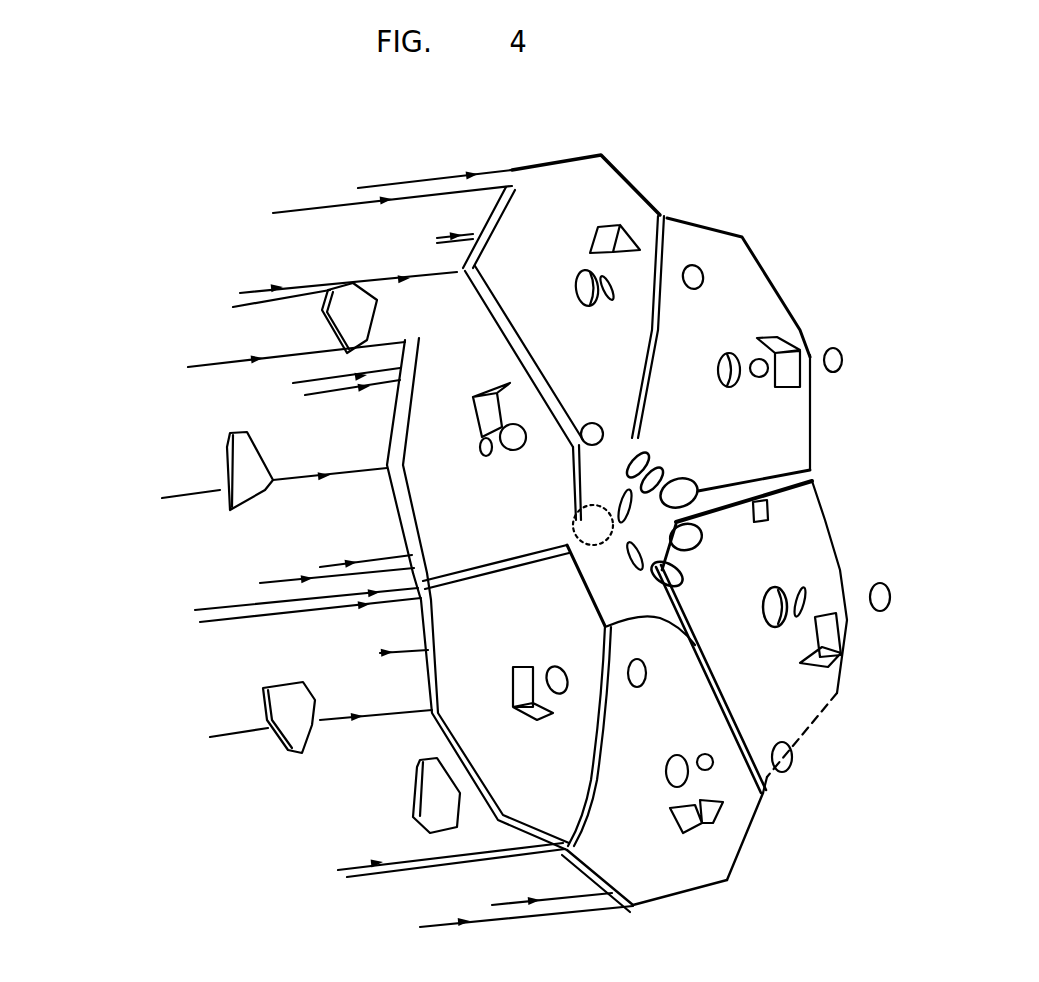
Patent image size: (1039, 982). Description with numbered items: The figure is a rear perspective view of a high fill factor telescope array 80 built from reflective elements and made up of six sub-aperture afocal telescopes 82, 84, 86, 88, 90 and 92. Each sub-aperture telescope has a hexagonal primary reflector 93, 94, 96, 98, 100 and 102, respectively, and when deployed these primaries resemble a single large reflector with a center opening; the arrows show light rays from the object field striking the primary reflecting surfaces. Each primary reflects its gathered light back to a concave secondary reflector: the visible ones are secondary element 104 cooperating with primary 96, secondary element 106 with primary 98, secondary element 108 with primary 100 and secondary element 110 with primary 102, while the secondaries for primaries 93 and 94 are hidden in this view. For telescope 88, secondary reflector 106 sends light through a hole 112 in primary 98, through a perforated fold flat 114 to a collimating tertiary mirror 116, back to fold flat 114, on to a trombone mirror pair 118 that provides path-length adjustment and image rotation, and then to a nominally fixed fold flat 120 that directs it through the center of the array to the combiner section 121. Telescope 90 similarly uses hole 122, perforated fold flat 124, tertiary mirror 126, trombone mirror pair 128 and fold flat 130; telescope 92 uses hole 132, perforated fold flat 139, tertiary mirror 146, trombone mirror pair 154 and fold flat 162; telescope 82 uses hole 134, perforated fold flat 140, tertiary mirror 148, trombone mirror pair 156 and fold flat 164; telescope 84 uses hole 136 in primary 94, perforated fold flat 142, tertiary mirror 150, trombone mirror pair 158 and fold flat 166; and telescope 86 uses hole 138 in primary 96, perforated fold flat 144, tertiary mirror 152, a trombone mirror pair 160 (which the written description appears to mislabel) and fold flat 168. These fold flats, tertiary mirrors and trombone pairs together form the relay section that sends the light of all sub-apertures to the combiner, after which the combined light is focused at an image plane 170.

The high fill factor telescope array 80 is at (860, 172).
The sub-aperture afocal telescope 82 is at (818, 306).
The sub-aperture afocal telescope 84 is at (858, 532).
The sub-aperture afocal telescope 86 is at (775, 847).
The sub-aperture afocal telescope 88 is at (274, 816).
The sub-aperture afocal telescope 90 is at (140, 408).
The sub-aperture afocal telescope 92 is at (640, 158).
The primary reflector 93 is at (796, 427).
The primary reflector 94 is at (822, 688).
The primary reflector 96 is at (698, 872).
The primary reflector 98 is at (462, 685).
The primary reflector 100 is at (436, 485).
The primary reflector 102 is at (536, 208).
The secondary element 104 is at (413, 800).
The secondary element 106 is at (262, 692).
The secondary element 108 is at (228, 503).
The secondary element 110 is at (347, 287).
The hole 112 is at (533, 667).
The perforated fold flat 114 is at (567, 693).
The collimating tertiary mirror 116 is at (645, 680).
The trombone mirror pair 118 is at (510, 677).
The fold flat 120 is at (690, 640).
The combiner section 121 is at (590, 500).
The hole 122 is at (489, 455).
The perforated fold flat 124 is at (510, 452).
The collimating tertiary mirror 126 is at (590, 423).
The trombone mirror pair 128 is at (478, 395).
The fold flat 130 is at (633, 568).
The hole 132 is at (572, 280).
The hole 134 is at (718, 366).
The hole 136 is at (770, 510).
The hole 138 is at (667, 777).
The perforated fold flat 139 is at (604, 302).
The perforated fold flat 140 is at (752, 360).
The perforated fold flat 142 is at (810, 605).
The perforated fold flat 144 is at (715, 767).
The collimating tertiary mirror 146 is at (697, 266).
The collimating tertiary mirror 148 is at (843, 360).
The collimating tertiary mirror 150 is at (893, 607).
The collimating tertiary mirror 152 is at (792, 749).
The trombone mirror pair 154 is at (637, 232).
The trombone mirror pair 156 is at (790, 333).
The trombone mirror pair 158 is at (843, 633).
The debris particle 160 is at (718, 824).
The fold flat 162 is at (640, 443).
The fold flat 164 is at (694, 482).
The fold flat 166 is at (703, 540).
The fold flat 168 is at (698, 595).
The image plane 170 is at (787, 590).